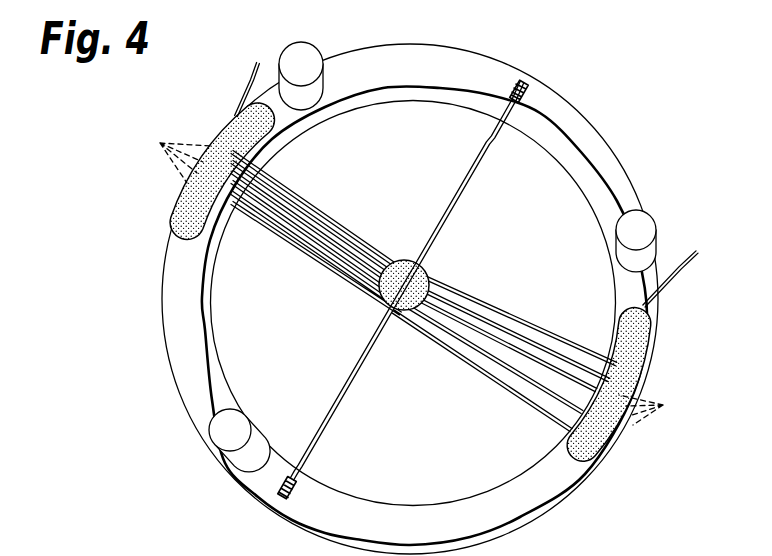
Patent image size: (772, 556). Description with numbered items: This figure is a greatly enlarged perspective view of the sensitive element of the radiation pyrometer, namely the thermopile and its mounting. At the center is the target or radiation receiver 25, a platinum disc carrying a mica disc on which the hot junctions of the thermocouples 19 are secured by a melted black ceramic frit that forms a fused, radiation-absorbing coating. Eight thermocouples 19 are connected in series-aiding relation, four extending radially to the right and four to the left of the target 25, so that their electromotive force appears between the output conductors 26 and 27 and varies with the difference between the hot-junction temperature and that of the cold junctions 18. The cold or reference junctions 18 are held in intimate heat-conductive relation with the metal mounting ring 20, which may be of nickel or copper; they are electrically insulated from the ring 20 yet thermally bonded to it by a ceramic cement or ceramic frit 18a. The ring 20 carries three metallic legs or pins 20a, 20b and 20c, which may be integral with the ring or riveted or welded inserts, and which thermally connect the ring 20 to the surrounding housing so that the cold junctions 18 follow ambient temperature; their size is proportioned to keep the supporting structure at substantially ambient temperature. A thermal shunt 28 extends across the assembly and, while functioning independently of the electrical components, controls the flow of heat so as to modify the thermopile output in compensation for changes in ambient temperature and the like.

The cold junctions 18 is at (413, 276).
The ceramic cement or ceramic frit 18a is at (185, 210).
The thermocouples 19 is at (473, 312).
The metal mounting ring 20 is at (616, 177).
The metallic leg 20a is at (222, 438).
The metallic leg 20b is at (643, 222).
The metallic leg 20c is at (313, 57).
The target 25 is at (409, 258).
The output conductor 26 is at (247, 90).
The output conductor 27 is at (690, 270).
The thermal shunt 28 is at (463, 193).